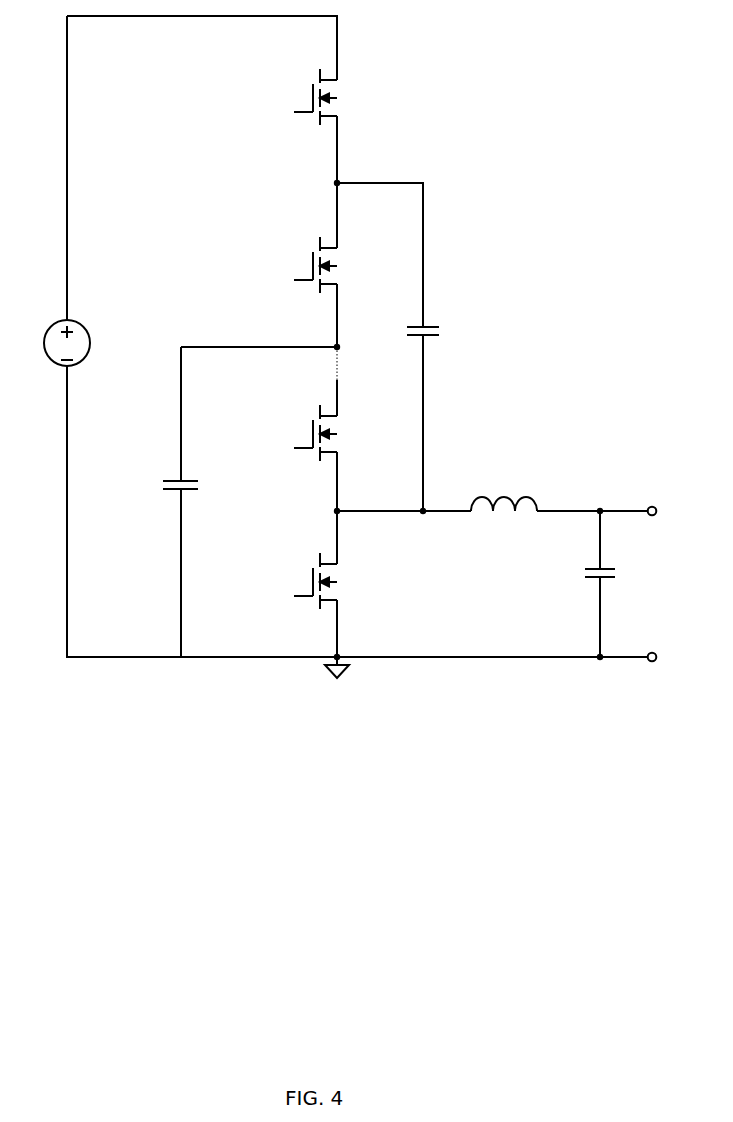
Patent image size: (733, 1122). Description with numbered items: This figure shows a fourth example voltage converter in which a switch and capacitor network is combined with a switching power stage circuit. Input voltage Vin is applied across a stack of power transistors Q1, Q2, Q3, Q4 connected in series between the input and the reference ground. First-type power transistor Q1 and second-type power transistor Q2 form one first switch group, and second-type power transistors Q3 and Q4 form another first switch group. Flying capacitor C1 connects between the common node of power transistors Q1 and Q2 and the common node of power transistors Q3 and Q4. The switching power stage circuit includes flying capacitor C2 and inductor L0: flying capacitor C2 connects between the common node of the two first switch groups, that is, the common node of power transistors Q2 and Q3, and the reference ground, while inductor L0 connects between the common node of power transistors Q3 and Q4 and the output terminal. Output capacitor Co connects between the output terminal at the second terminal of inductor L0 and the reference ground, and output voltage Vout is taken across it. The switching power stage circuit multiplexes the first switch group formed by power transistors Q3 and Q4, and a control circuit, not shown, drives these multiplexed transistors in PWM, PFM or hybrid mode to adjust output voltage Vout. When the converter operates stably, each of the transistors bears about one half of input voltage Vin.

The first-type power transistor Q1 is at (335, 97).
The second-type power transistor Q2 is at (335, 265).
The second-type power transistor Q3 is at (335, 433).
The second-type power transistor Q4 is at (335, 581).
The flying capacitor C1 is at (406, 334).
The flying capacitor C2 is at (161, 484).
The output capacitor Co is at (582, 574).
The inductor L0 is at (504, 490).
The input voltage Vin is at (84, 343).
The output voltage Vout is at (641, 583).